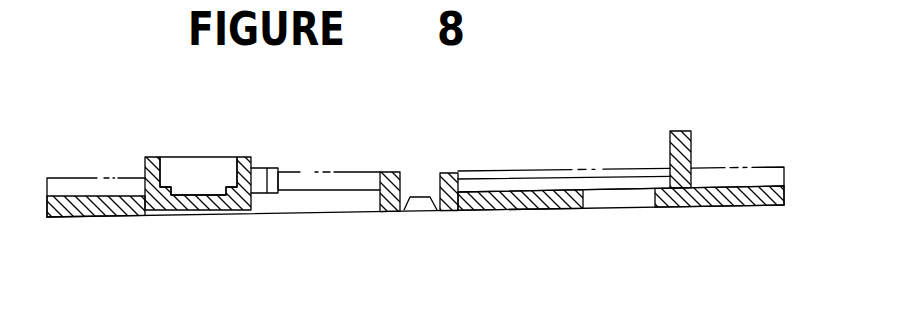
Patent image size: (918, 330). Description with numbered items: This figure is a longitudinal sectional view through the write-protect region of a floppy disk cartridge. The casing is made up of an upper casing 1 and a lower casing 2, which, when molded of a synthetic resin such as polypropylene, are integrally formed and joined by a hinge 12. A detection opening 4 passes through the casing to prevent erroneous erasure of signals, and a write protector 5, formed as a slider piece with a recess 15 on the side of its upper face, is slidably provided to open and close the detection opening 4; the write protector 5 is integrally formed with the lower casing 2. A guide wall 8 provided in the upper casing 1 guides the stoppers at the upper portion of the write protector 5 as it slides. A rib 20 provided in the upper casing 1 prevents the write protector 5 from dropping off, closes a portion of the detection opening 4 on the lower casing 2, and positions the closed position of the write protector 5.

The upper casing 1 is at (457, 206).
The lower casing 2 is at (108, 206).
The detection opening 4 is at (295, 203).
The write protector 5 is at (195, 210).
The guide wall 8 is at (527, 183).
The hinge 12 is at (413, 197).
The recess 15 is at (200, 192).
The rib 20 is at (689, 131).